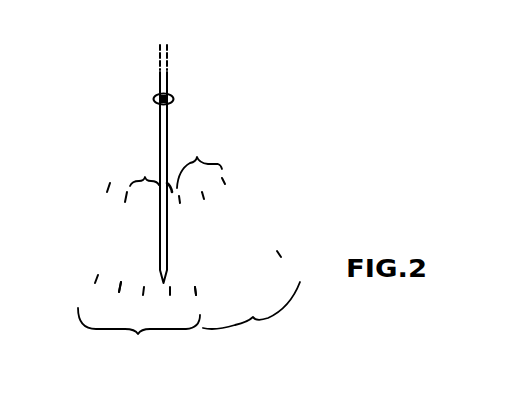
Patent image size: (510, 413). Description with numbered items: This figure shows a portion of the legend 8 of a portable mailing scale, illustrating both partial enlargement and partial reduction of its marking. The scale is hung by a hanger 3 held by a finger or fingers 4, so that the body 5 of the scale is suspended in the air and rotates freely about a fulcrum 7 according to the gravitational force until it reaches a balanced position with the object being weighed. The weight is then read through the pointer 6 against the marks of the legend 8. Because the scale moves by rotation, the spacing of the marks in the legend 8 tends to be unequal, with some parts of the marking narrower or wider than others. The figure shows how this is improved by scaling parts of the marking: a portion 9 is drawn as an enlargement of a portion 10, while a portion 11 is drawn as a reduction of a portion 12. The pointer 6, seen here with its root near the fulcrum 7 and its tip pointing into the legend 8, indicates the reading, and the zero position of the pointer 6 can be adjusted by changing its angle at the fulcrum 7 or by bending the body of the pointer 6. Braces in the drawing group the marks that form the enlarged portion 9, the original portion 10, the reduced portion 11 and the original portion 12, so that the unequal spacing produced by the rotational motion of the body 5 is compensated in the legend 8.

The hanger 3 is at (258, 230).
The fingers 4 is at (208, 206).
The body 5 is at (189, 255).
The pointer 6 is at (157, 132).
The fulcrum 7 is at (178, 92).
The legend 8 is at (114, 297).
The portion 9 is at (139, 281).
The portion 10 is at (136, 170).
The portion 11 is at (199, 157).
The portion 12 is at (251, 331).